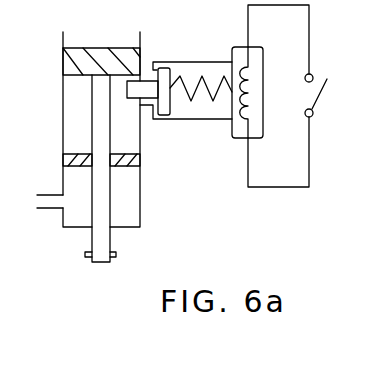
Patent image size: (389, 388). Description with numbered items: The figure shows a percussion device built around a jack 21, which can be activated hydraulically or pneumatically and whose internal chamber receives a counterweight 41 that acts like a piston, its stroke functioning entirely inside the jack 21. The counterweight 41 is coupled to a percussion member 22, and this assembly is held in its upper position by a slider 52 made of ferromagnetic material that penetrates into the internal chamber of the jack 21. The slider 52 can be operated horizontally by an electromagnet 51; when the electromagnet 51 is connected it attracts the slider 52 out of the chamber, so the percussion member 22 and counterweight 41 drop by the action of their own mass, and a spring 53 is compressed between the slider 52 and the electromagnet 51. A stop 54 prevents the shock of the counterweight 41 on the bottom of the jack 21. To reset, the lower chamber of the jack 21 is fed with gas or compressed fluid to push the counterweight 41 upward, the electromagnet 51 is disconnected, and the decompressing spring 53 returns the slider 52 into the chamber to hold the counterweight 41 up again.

The jack 21 is at (140, 205).
The percussion member 22 is at (102, 246).
The counterweight 41 is at (102, 54).
The electromagnet 51 is at (237, 56).
The slider 52 is at (165, 68).
The spring 53 is at (208, 97).
The stop 54 is at (139, 162).